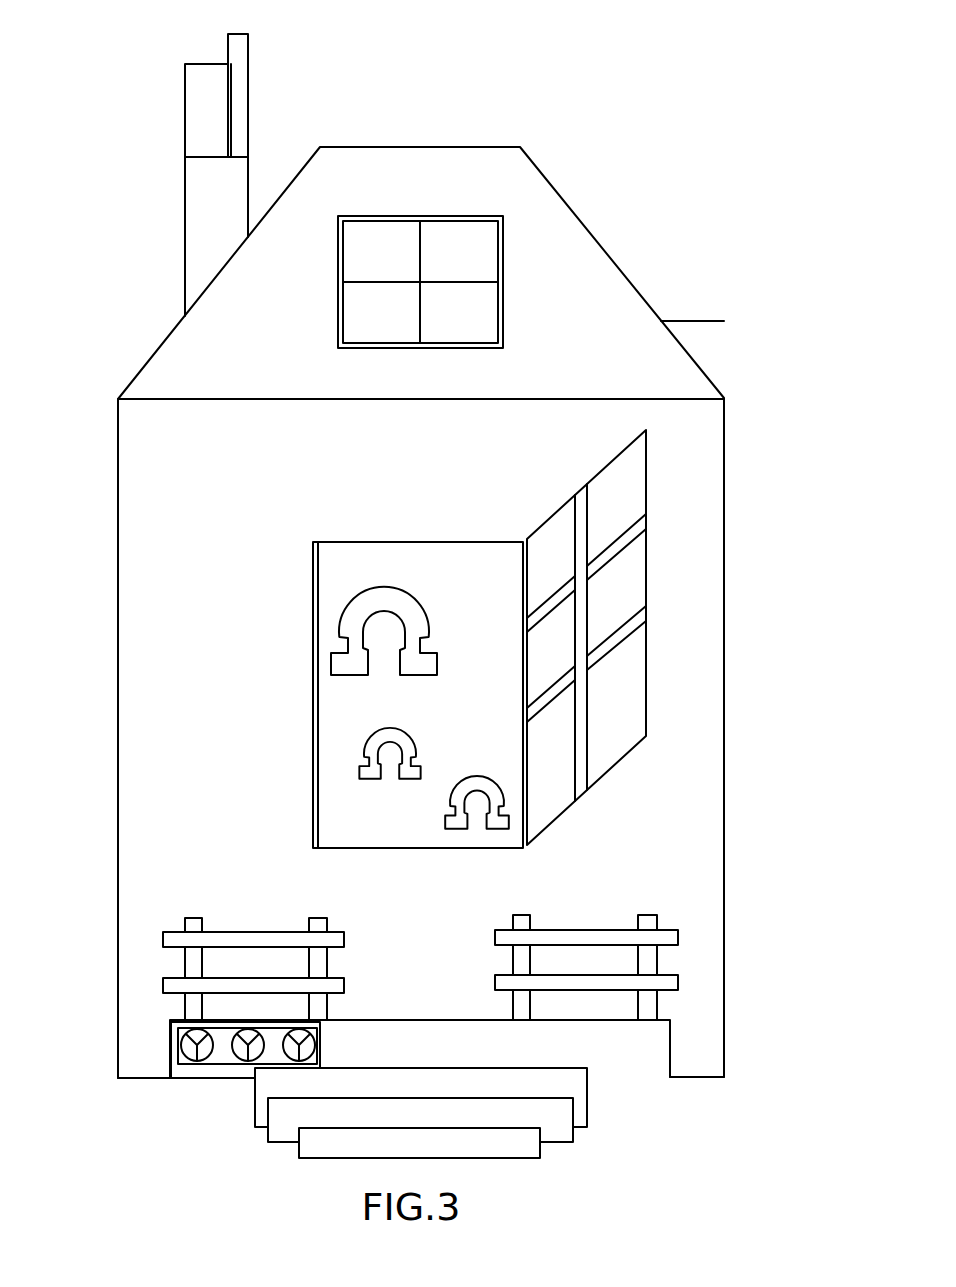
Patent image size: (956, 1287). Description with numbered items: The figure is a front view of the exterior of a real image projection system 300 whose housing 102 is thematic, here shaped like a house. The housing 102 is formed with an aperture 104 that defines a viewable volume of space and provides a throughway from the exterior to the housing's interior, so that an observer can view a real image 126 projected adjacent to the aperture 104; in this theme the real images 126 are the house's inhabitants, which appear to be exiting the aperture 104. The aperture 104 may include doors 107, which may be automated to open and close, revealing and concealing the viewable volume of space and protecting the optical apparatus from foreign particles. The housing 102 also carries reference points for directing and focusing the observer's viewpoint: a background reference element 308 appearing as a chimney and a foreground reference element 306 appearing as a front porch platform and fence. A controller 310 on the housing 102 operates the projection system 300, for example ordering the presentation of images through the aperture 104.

The real image projection system 300 is at (603, 114).
The housing 102 is at (118, 795).
The aperture 104 is at (363, 828).
The real image 126 is at (394, 590).
The aperture doors 107 is at (646, 567).
The foreground reference element 306 is at (344, 938).
The background reference element 308 is at (185, 210).
The controller 310 is at (207, 1060).